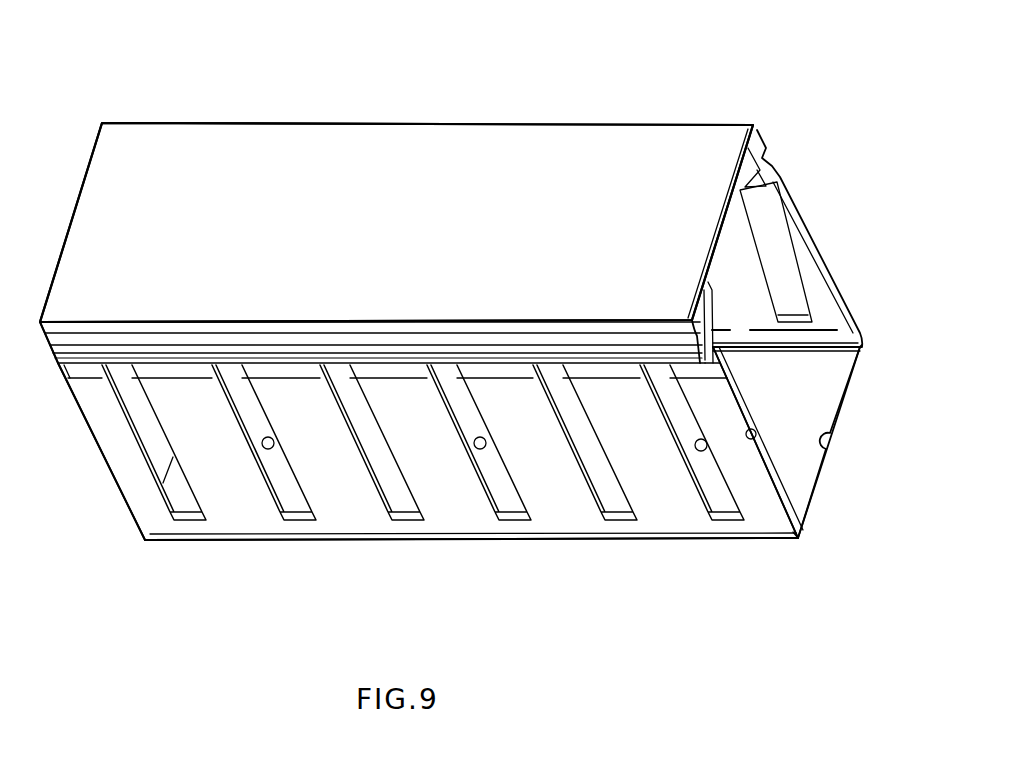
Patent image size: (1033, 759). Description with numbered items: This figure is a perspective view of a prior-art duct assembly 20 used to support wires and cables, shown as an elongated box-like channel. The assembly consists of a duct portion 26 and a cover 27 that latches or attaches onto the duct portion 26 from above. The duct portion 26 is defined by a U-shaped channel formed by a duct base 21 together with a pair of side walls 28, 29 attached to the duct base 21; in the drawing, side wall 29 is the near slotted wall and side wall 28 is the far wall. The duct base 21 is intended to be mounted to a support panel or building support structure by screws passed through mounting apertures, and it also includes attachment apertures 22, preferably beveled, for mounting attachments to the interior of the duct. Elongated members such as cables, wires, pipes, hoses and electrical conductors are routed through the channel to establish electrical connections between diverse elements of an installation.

The enclosure assembly 20 is at (783, 88).
The duct base 21 is at (821, 480).
The attachment apertures 22 is at (703, 452).
The duct portion 26 is at (778, 494).
The cover 27 is at (446, 172).
The side wall 28 is at (806, 232).
The side wall 29 is at (118, 462).